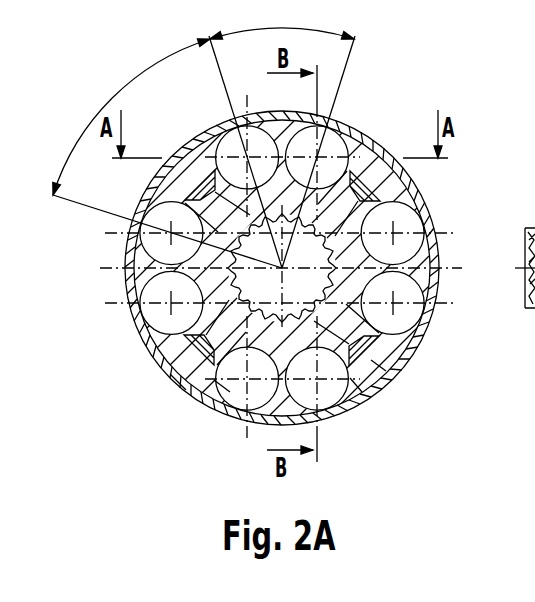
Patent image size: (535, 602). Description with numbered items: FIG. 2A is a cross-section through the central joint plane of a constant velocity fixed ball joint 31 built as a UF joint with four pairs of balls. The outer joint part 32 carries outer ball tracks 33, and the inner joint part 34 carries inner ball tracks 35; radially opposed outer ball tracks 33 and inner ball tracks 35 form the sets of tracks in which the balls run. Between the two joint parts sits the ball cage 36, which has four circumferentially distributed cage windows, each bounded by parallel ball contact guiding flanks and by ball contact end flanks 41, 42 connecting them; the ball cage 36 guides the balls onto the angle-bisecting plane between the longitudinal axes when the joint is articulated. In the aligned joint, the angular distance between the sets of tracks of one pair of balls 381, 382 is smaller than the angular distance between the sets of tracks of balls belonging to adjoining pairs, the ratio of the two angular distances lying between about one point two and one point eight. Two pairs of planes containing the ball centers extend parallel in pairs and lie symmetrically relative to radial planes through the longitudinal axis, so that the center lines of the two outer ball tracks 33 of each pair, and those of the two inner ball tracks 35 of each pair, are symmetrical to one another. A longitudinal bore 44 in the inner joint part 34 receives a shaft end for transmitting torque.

The constant velocity fixed ball joint 31 is at (461, 51).
The outer joint part 32 is at (282, 236).
The outer ball tracks 33 is at (282, 298).
The inner joint part 34 is at (282, 263).
The inner ball tracks 35 is at (205, 411).
The ball cage 36 is at (405, 385).
The ball of a pair of balls 381 is at (228, 126).
The ball of a pair of balls 382 is at (333, 129).
The ball contact end flank 41 is at (164, 400).
The ball contact end flank 42 is at (379, 409).
The longitudinal bore 44 is at (282, 268).